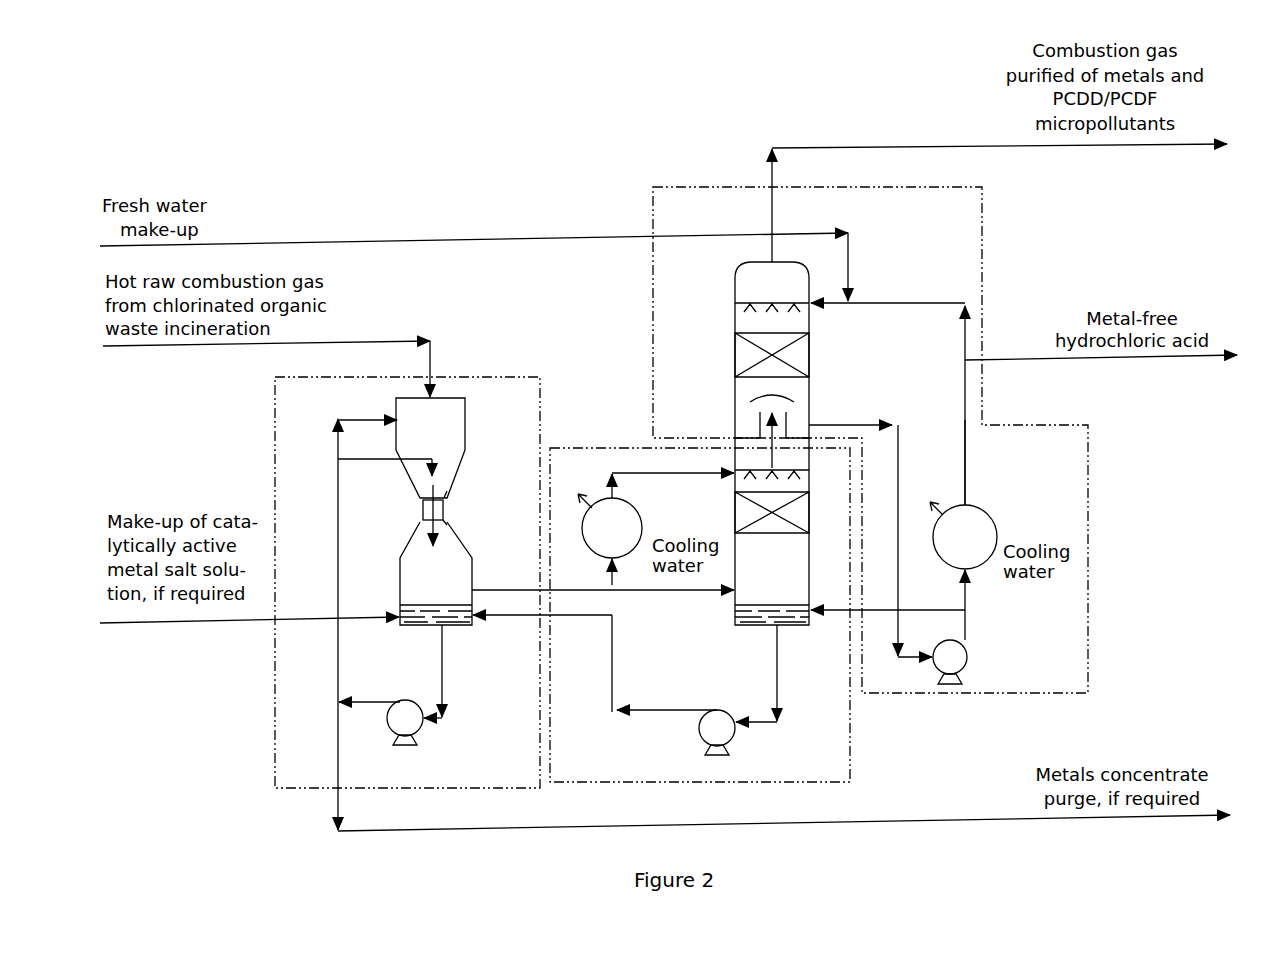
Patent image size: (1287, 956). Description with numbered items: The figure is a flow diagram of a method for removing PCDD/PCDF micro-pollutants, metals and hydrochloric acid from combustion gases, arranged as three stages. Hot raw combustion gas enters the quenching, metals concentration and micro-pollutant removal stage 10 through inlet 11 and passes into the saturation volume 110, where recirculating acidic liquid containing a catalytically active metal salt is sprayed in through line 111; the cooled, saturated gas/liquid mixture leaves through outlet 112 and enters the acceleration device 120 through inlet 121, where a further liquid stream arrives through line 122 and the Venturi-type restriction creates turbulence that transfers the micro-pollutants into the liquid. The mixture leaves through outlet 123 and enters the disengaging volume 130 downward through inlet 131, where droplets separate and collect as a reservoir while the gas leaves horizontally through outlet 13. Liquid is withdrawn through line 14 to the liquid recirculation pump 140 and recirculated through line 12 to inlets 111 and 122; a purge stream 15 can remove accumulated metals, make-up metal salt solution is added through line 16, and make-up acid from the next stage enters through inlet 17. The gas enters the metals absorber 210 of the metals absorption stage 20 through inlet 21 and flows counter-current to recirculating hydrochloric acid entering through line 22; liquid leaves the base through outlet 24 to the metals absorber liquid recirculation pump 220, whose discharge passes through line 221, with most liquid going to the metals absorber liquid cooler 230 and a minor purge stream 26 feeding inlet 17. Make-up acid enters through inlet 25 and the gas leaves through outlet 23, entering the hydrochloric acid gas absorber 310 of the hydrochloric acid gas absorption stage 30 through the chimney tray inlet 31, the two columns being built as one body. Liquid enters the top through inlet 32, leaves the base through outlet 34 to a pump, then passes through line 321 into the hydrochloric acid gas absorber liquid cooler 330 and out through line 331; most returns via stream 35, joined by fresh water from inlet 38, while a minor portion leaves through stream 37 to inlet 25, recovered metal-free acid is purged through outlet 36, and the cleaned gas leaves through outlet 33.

The quenching, metals concentration and PCDD/PCDF micro-pollutant removal stage 10 is at (478, 377).
The raw combustion gas inlet 11 is at (362, 342).
The saturation volume 110 is at (466, 421).
The recirculating liquid inlet to saturation volume 111 is at (356, 421).
The saturation volume outlet 112 is at (432, 487).
The liquid recirculation line 12 is at (326, 498).
The acceleration device 120 is at (422, 512).
The acceleration device inlet 121 is at (448, 500).
The recirculating liquid inlet to acceleration device 122 is at (392, 460).
The acceleration device outlet 123 is at (445, 518).
The gas outlet of disengaging volume 13 is at (526, 590).
The disengaging volume 130 is at (397, 578).
The disengaging volume inlet 131 is at (401, 553).
The liquid withdrawal line 14 is at (364, 700).
The liquid recirculation pump 140 is at (420, 732).
The purge stream 15 is at (440, 831).
The make-up metal salt solution line 16 is at (210, 626).
The make-up liquid inlet from stage 20 17 is at (517, 622).
The metals absorption stage 20 is at (635, 447).
The gas inlet to metals absorber 21 is at (706, 591).
The metals absorber 210 is at (735, 508).
The cooled liquid return to metals absorber 22 is at (672, 473).
The metals absorber liquid recirculation pump 220 is at (697, 735).
The pump discharge line 221 is at (632, 710).
The metals absorption stage gas outlet 23 is at (771, 450).
The metals absorber liquid cooler 230 is at (630, 510).
The metals absorber liquid outlet 24 is at (776, 660).
The metal-free hydrochloric acid make-up inlet 25 is at (840, 618).
The stage 20 purge/make-up stream 26 is at (608, 618).
The hydrochloric acid gas absorption stage 30 is at (653, 343).
The gas inlet to hydrochloric acid gas absorber 31 is at (786, 430).
The hydrochloric acid gas absorber 310 is at (733, 350).
The liquid inlet to hydrochloric acid gas absorber 32 is at (966, 668).
The pump discharge line to cooler 321 is at (966, 640).
The purified gas outlet 33 is at (833, 147).
The hydrochloric acid gas absorber liquid cooler 330 is at (997, 528).
The cooler outlet line 331 is at (966, 485).
The hydrochloric acid gas absorber liquid outlet 34 is at (855, 425).
The liquid recycle stream to stage 30 35 is at (900, 303).
The metal-free hydrochloric acid purge outlet 36 is at (1010, 361).
The stage 30 make-up stream to stage 20 37 is at (910, 610).
The fresh water make-up inlet 38 is at (325, 241).